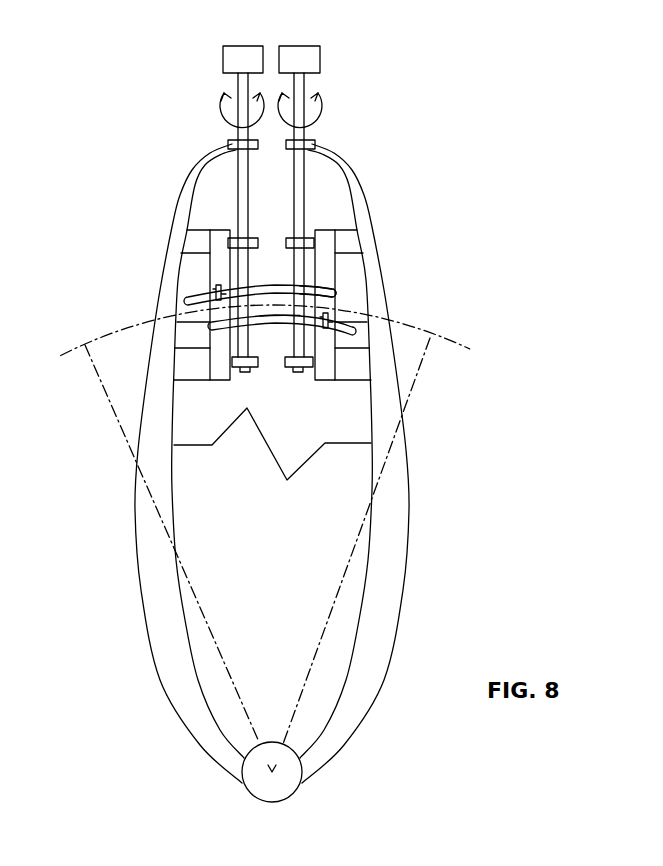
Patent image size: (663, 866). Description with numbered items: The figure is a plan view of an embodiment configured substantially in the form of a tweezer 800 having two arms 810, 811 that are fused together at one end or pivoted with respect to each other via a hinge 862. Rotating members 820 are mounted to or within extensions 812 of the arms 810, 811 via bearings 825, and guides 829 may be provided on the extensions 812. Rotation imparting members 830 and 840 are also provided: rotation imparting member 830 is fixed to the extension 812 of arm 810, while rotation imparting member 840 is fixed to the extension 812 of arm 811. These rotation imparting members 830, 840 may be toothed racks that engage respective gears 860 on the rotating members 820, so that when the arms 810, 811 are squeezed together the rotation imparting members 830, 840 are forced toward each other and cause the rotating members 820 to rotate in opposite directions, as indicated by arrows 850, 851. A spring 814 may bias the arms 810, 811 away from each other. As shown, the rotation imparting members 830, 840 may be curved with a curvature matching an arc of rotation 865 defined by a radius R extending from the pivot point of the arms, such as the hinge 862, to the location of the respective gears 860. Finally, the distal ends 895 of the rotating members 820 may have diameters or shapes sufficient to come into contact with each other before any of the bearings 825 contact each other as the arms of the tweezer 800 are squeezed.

The tweezer 800 is at (509, 479).
The arm 810 is at (407, 567).
The arm 811 is at (137, 573).
The extension 812 is at (210, 272).
The spring 814 is at (267, 443).
The rotating member 820 is at (236, 198).
The bearing 825 is at (285, 238).
The guide 829 is at (343, 316).
The rotation imparting member 830 is at (318, 289).
The rotation imparting member 840 is at (241, 287).
The arrow 850 is at (320, 108).
The arrow 851 is at (220, 108).
The gear 860 is at (297, 313).
The hinge 862 is at (290, 803).
The arc of rotation 865 is at (470, 348).
The distal end 895 is at (233, 45).
The radius R is at (393, 442).